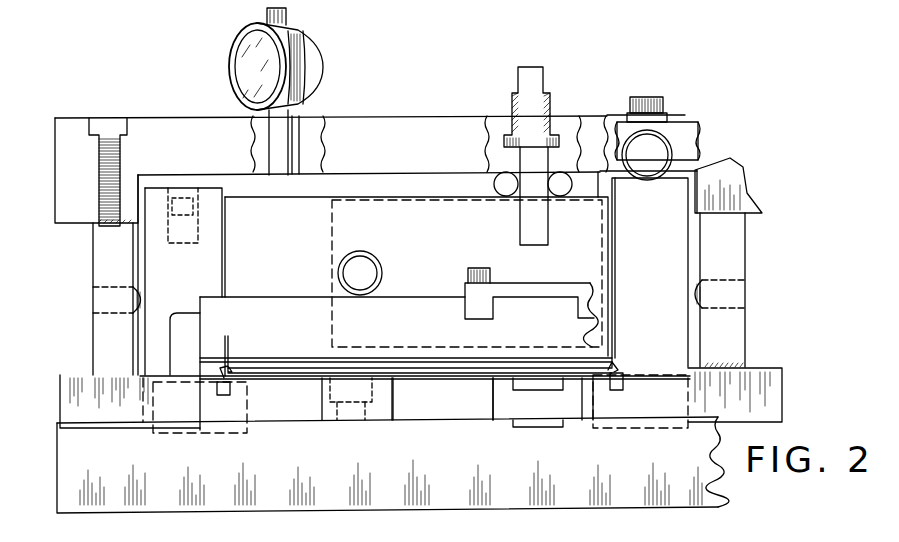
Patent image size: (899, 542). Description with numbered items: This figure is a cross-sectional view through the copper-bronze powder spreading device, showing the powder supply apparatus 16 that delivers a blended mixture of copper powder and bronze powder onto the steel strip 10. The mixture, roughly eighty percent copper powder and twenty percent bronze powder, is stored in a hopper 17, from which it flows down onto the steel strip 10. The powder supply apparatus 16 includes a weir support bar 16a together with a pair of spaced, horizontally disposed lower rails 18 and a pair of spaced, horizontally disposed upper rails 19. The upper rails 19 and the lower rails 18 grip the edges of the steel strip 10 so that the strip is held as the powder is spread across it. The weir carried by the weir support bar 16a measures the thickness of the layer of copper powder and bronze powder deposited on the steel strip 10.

The steel strip 10 is at (455, 376).
The powder supply apparatus 16 is at (592, 108).
The weir support bar 16a is at (180, 129).
The hopper 17 is at (361, 136).
The lower rails 18 is at (233, 400).
The upper rails 19 is at (157, 260).